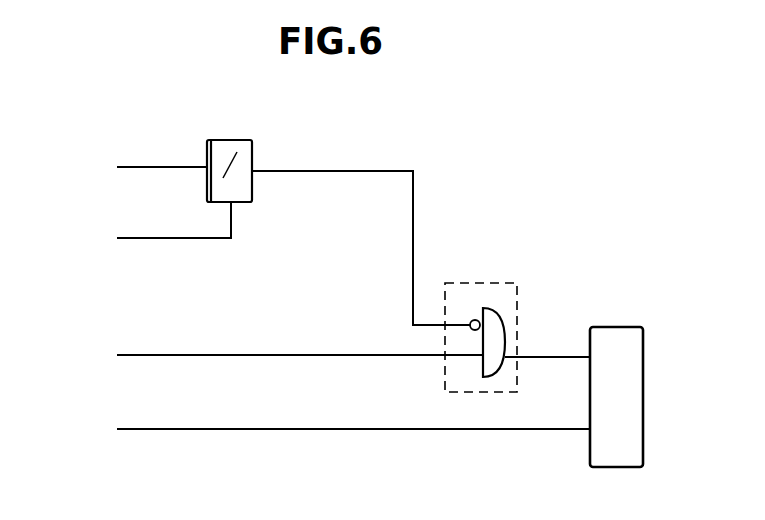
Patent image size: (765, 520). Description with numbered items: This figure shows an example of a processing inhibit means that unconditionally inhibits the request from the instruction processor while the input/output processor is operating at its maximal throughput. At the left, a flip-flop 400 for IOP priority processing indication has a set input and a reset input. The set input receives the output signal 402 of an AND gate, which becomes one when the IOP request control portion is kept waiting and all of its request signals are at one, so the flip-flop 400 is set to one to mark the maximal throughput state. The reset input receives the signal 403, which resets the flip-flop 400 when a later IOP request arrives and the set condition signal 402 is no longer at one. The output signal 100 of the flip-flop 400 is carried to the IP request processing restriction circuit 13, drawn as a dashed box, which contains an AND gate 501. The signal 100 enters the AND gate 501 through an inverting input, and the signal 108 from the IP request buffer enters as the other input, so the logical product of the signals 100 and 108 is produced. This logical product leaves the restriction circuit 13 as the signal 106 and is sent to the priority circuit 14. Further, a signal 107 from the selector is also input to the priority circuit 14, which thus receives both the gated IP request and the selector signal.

The flip-flop for IOP priority processing indication 400 is at (230, 140).
The output signal of AND gate 402 is at (123, 165).
The reset signal 403 is at (135, 228).
The output signal of the IOP priority processing indication flip-flop 100 is at (370, 171).
The IP request processing restriction circuit 13 is at (488, 283).
The AND gate 501 is at (497, 308).
The signal from the IP request buffer 108 is at (264, 352).
The logical product signal 106 is at (552, 357).
The signal from the selector 107 is at (317, 427).
The priority circuit 14 is at (590, 460).